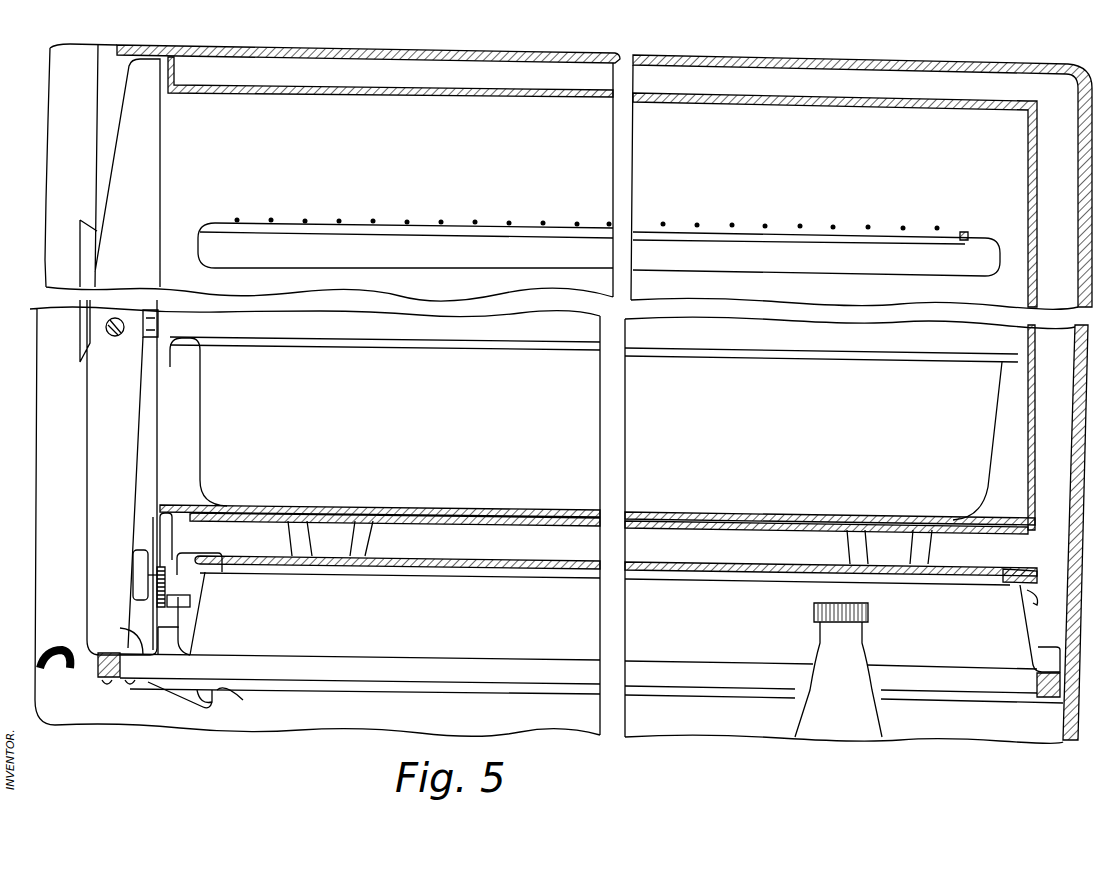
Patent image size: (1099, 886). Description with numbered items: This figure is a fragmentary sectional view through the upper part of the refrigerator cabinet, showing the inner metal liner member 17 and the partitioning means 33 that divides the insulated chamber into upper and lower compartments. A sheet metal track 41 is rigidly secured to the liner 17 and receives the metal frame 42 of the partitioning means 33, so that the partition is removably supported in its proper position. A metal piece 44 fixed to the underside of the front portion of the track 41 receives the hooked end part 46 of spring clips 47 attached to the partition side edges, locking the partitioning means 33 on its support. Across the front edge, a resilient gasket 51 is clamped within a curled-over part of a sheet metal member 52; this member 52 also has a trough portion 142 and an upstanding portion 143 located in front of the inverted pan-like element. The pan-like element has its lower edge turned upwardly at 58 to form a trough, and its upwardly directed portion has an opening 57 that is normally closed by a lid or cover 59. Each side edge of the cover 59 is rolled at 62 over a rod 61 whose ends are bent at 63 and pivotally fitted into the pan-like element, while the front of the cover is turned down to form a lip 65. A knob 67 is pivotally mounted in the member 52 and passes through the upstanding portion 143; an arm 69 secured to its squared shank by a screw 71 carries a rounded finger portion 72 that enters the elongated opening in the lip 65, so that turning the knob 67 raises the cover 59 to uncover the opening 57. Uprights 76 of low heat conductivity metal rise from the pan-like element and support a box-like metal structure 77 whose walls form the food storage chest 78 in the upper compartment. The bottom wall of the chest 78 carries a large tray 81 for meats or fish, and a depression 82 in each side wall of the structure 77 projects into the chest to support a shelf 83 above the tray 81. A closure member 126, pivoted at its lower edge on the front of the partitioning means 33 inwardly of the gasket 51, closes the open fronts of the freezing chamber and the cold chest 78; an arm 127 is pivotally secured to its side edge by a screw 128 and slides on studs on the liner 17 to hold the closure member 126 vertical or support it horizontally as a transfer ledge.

The inner metal liner member 17 is at (1076, 162).
The partitioning means 33 is at (510, 658).
The sheet metal track 41 is at (420, 689).
The metal frame 42 is at (303, 671).
The metal piece 44 is at (203, 691).
The hooked end part 46 is at (223, 708).
The spring clips 47 is at (170, 698).
The resilient gasket 51 is at (63, 648).
The sheet metal member 52 is at (92, 674).
The opening 57 is at (393, 564).
The upturned lower edge 58 is at (167, 641).
The lid or cover 59 is at (538, 558).
The rod 61 is at (1042, 578).
The rolled-over side edge 62 is at (1030, 580).
The bent rod ends 63 is at (207, 583).
The downwardly turned front lip 65 is at (195, 612).
The knob 67 is at (140, 555).
The arm 69 is at (168, 565).
The screw 71 is at (193, 593).
The rounded finger portion 72 is at (183, 616).
The uprights 76 is at (368, 536).
The box-like metal structure 77 is at (1038, 183).
The food storage chest 78 is at (368, 96).
The tray 81 is at (197, 417).
The depression 82 is at (362, 242).
The shelf 83 is at (437, 219).
The closure member 126 is at (133, 191).
The arm 127 is at (145, 348).
The screw 128 is at (110, 338).
The trough portion 142 is at (143, 656).
The upstanding portion 143 is at (158, 611).